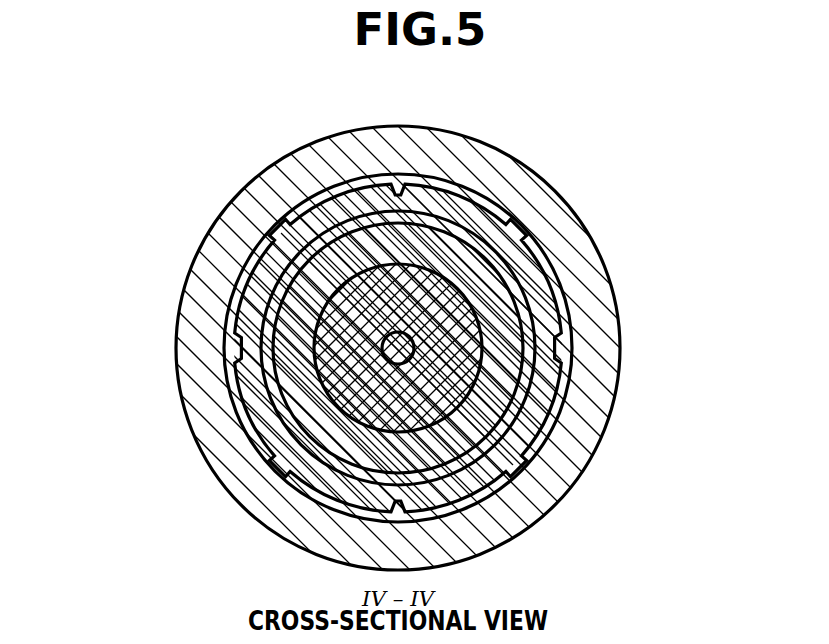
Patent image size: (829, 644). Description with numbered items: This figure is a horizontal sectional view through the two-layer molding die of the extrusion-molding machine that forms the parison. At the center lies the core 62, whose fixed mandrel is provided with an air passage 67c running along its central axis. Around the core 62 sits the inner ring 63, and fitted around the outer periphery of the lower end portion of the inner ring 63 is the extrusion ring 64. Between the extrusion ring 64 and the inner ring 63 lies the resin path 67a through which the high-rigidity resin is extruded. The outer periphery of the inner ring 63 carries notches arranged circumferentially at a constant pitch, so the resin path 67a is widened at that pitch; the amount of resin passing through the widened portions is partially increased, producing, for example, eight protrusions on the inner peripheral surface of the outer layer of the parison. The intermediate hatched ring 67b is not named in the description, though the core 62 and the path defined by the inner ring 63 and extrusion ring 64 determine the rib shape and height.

The core 62 is at (462, 318).
The inner ring 63 is at (556, 330).
The extrusion ring 64 is at (590, 428).
The resin path 67a is at (463, 190).
The outer hatched ring layer 67b is at (498, 218).
The air passage 67c is at (390, 347).